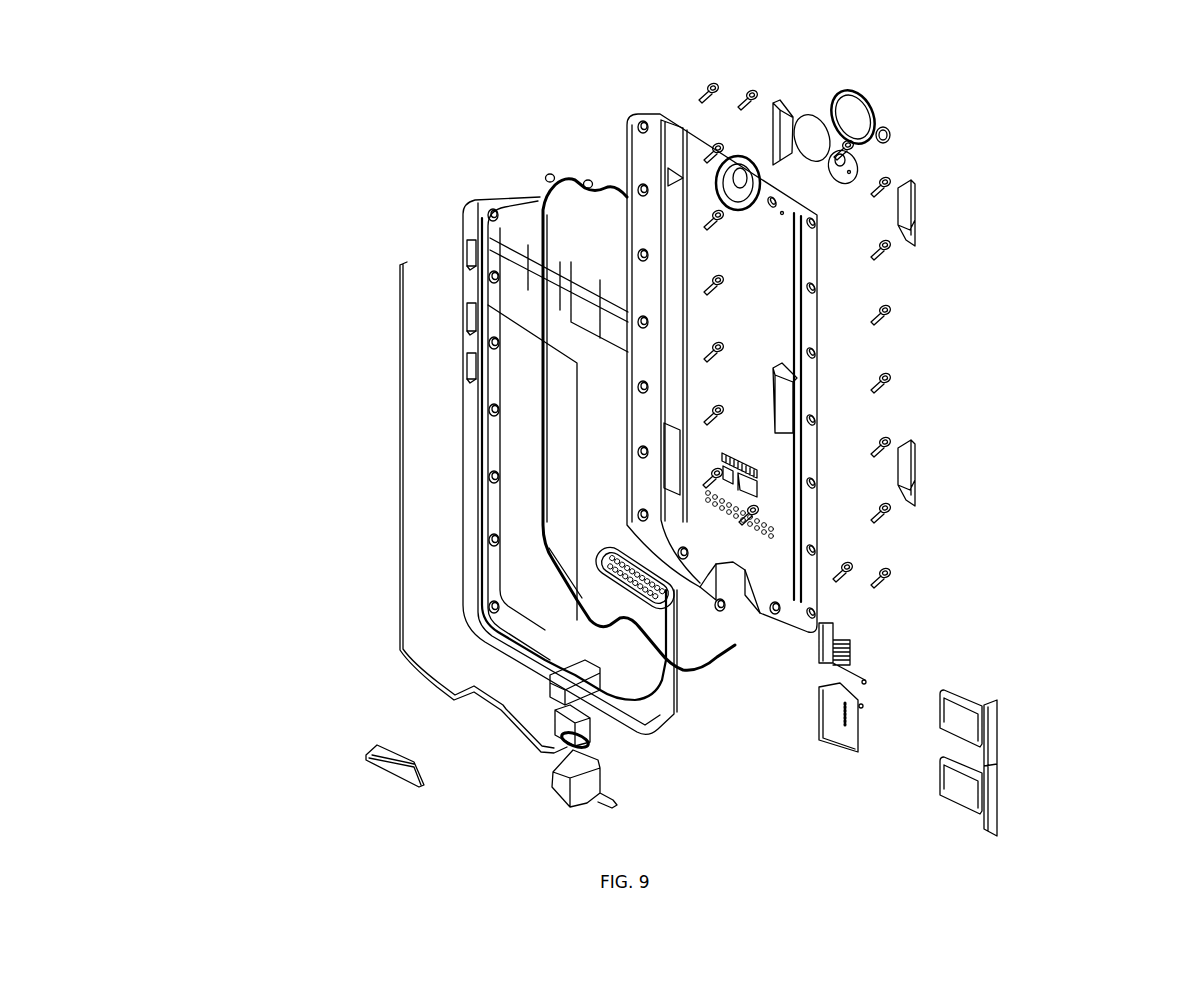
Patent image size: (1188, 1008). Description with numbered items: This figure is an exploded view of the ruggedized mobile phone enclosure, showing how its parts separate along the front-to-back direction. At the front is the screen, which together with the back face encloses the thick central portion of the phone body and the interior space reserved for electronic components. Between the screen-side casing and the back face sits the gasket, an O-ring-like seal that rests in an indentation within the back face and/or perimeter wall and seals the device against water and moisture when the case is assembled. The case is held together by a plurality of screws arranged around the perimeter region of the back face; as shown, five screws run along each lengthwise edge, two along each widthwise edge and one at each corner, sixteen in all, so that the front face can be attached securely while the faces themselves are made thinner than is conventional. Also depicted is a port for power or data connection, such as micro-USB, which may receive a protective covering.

The element screen is at (395, 520).
The element gasket is at (538, 196).
The element back face is at (777, 570).
The element screws is at (890, 312).
The element port is at (986, 796).